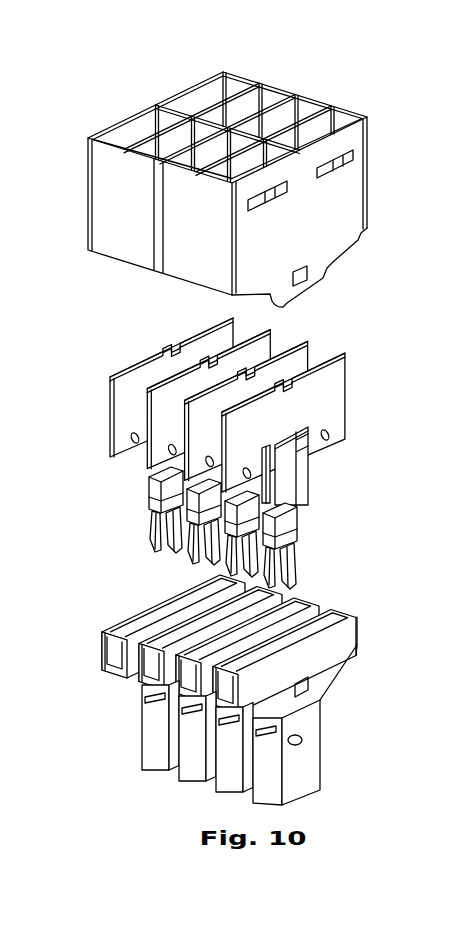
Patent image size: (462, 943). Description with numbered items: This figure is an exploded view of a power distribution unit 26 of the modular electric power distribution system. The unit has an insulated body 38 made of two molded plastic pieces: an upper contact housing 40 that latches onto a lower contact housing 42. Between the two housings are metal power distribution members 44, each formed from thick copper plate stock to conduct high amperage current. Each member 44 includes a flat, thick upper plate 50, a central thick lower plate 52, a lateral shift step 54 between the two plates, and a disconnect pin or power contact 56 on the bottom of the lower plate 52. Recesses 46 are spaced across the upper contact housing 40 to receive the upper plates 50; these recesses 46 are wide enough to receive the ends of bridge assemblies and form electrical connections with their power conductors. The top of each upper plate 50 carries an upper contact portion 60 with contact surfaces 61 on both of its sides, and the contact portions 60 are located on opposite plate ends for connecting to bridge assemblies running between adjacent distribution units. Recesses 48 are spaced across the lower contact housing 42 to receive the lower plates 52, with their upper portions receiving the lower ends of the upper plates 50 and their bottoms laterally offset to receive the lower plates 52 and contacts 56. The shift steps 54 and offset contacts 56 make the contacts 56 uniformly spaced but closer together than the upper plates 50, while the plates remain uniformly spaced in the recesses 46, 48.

The power distribution unit 26 is at (239, 424).
The body 38 is at (239, 189).
The upper contact housing 40 is at (87, 192).
The recesses 46 is at (342, 121).
The upper plate 50 is at (228, 393).
The upper contact portion 60 is at (197, 401).
The contact surfaces 61 is at (228, 394).
The power distribution member 44 is at (234, 504).
The lower plate 52 is at (280, 504).
The lateral shift step 54 is at (281, 434).
The power contact 56 is at (299, 538).
The lower contact housing 42 is at (265, 687).
The recesses 48 is at (321, 612).